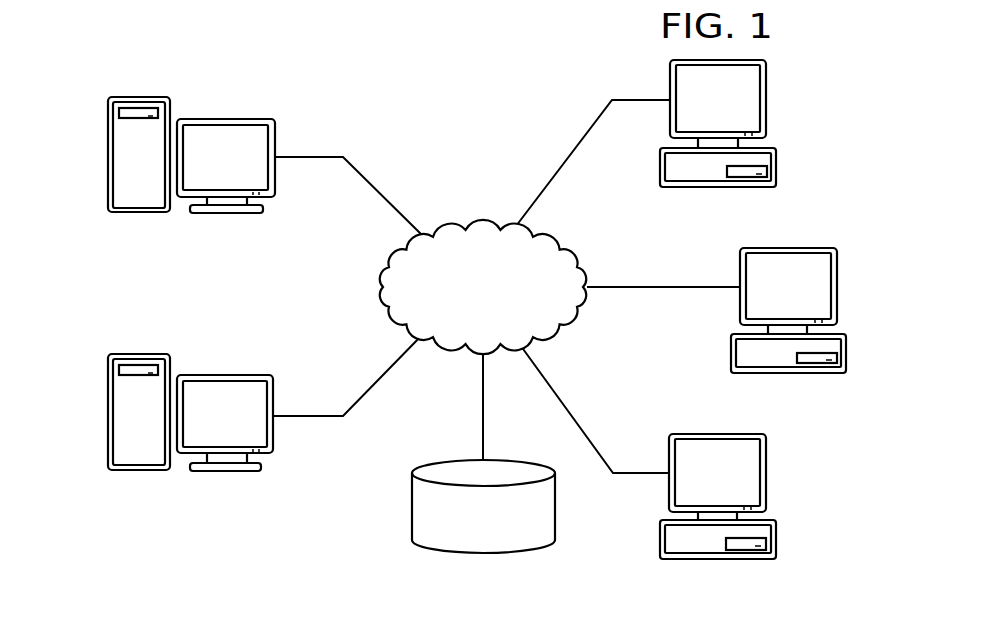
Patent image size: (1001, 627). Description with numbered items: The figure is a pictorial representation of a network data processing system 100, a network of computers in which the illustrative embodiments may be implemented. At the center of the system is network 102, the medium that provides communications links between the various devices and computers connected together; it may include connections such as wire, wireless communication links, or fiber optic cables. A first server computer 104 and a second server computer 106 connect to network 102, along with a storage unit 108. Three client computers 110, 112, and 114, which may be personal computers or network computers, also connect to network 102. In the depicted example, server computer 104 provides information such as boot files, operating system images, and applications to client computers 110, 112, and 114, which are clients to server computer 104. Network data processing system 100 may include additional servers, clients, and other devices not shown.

The network data processing system 100 is at (348, 63).
The network 102 is at (477, 222).
The server computer 104 is at (108, 155).
The server computer 106 is at (108, 412).
The storage unit 108 is at (412, 508).
The client computer 110 is at (777, 168).
The client computer 112 is at (847, 353).
The client computer 114 is at (777, 540).